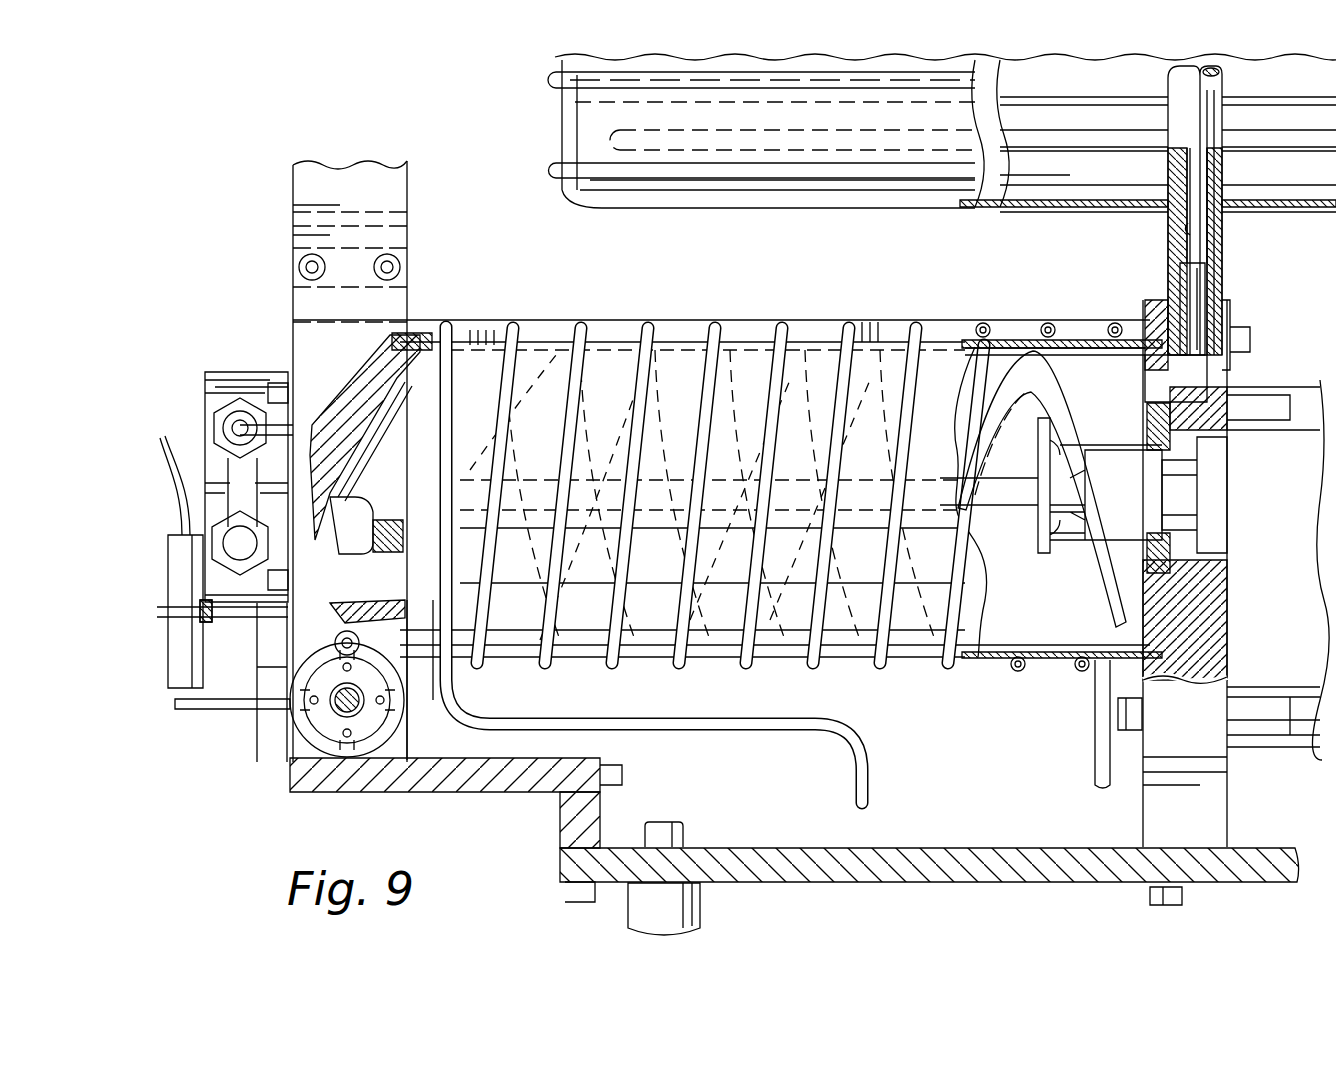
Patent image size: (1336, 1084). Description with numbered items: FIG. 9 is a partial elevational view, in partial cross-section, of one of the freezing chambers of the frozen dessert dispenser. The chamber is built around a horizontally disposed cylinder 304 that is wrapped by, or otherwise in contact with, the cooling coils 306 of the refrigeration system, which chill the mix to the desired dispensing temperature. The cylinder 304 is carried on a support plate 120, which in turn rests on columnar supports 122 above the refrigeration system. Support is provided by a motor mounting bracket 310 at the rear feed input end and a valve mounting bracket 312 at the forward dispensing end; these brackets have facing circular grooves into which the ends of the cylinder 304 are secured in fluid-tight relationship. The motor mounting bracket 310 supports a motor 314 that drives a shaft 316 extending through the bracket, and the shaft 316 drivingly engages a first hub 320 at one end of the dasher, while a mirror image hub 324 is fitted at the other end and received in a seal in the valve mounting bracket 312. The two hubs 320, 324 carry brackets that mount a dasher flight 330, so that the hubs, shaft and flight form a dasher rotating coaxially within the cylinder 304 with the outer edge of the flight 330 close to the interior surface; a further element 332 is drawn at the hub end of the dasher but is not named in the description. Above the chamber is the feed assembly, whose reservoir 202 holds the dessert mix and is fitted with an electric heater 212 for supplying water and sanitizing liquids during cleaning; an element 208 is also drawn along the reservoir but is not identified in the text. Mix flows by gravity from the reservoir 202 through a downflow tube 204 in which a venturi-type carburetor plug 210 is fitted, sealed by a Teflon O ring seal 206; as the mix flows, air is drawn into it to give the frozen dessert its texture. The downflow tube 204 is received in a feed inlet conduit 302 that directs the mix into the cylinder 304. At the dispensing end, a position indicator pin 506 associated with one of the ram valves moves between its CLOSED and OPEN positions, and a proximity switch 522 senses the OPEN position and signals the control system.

The support plate 120 is at (935, 840).
The columnar supports 122 is at (700, 920).
The reservoir 202 is at (562, 124).
The downflow tube 204 is at (1215, 288).
The O ring seal 206 is at (1200, 237).
The guide rod 208 is at (548, 79).
The carburetor plug 210 is at (1222, 170).
The electric heater 212 is at (768, 150).
The feed inlet conduit 302 is at (1200, 389).
The cylinder 304 is at (1078, 336).
The cooling coils 306 is at (1046, 324).
The motor mounting bracket 310 is at (1227, 594).
The valve mounting bracket 312 is at (398, 306).
The motor 314 is at (1268, 388).
The shaft 316 is at (1182, 492).
The first hub 320 is at (1150, 497).
The hub 324 is at (410, 470).
The dasher flight 330 is at (1078, 402).
The flange 332 is at (1010, 530).
The position indicator pin 506 is at (185, 712).
The proximity switch 522 is at (168, 560).